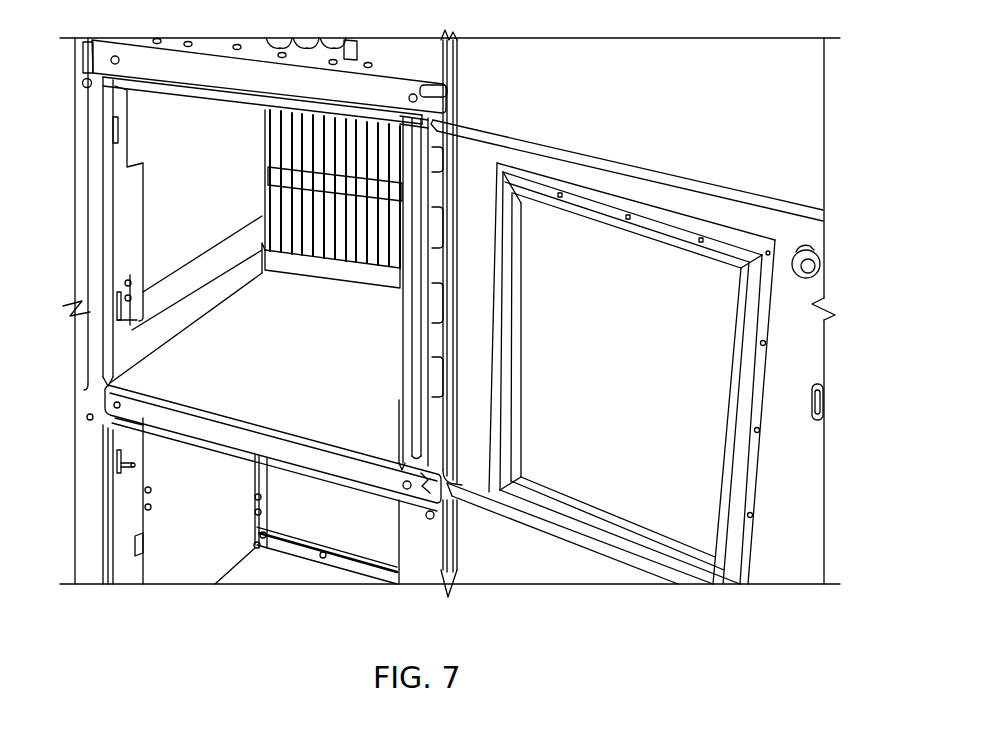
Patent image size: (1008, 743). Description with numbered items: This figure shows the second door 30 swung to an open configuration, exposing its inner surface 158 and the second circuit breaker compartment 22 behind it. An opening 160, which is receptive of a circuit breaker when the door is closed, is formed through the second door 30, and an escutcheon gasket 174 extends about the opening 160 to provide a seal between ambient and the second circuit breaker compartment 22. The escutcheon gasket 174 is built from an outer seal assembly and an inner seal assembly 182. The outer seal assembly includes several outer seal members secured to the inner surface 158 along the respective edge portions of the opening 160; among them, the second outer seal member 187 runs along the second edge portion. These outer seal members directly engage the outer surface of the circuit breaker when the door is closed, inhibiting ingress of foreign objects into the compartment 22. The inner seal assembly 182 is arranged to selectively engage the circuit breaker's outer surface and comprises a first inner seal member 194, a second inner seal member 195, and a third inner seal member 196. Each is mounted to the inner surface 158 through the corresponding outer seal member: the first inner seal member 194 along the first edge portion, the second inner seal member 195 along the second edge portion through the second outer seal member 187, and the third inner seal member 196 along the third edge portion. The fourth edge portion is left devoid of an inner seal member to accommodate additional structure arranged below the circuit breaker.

The second circuit breaker compartment 22 is at (310, 140).
The second door 30 is at (762, 166).
The inner surface 158 is at (483, 192).
The first inner seal member 194 is at (598, 195).
The third inner seal member 196 is at (506, 333).
The second inner seal member 195 is at (740, 387).
The second outer seal member 187 is at (557, 500).
The opening 160 is at (630, 533).
The inner seal assembly 182 is at (735, 550).
The escutcheon gasket 174 is at (782, 461).